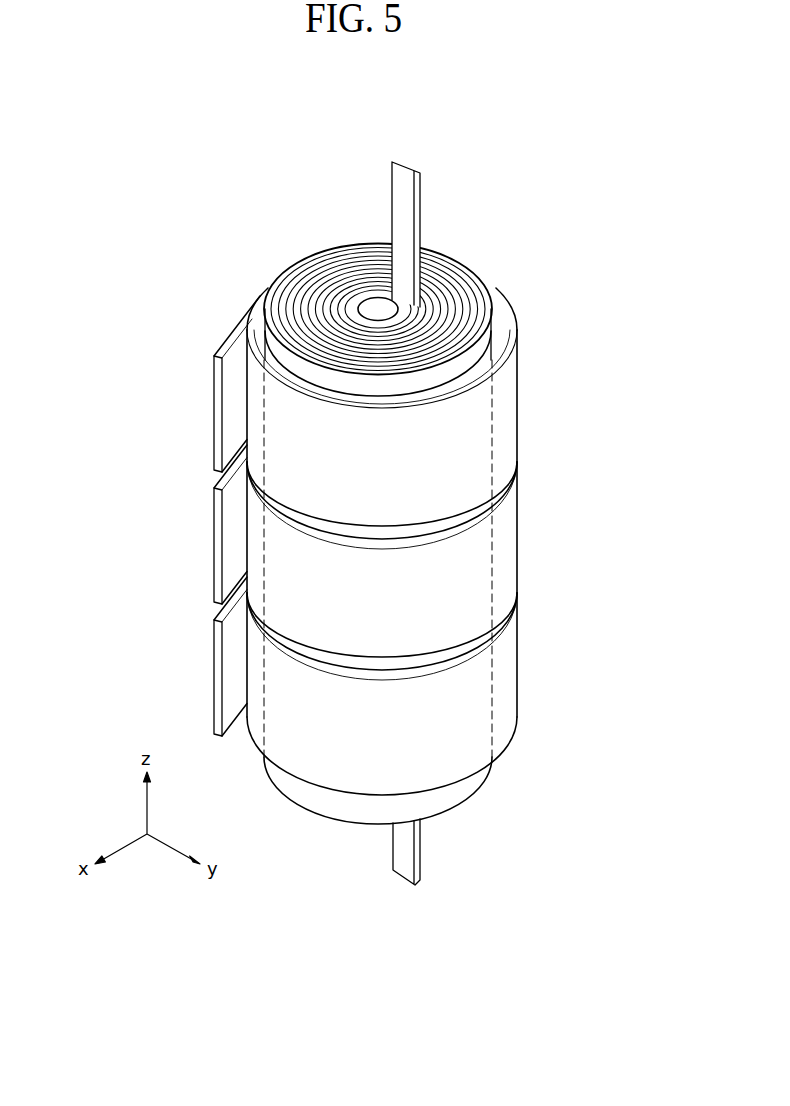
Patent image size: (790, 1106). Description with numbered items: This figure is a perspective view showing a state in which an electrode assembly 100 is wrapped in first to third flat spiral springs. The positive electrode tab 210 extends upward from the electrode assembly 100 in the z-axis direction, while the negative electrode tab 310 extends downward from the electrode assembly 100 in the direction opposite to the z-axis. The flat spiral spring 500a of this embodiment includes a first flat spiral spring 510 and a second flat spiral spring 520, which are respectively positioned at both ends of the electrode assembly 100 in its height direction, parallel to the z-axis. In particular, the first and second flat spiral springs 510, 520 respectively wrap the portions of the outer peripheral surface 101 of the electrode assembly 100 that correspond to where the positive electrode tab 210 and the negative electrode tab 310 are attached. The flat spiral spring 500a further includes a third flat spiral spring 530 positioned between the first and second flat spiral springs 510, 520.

The electrode assembly 100 is at (255, 189).
The outer peripheral surface 101 is at (463, 363).
The positive electrode tab 210 is at (422, 189).
The negative electrode tab 310 is at (402, 859).
The flat spiral spring 500a is at (615, 645).
The first flat spiral spring 510 is at (505, 436).
The second flat spiral spring 520 is at (505, 670).
The third flat spiral spring 530 is at (505, 550).